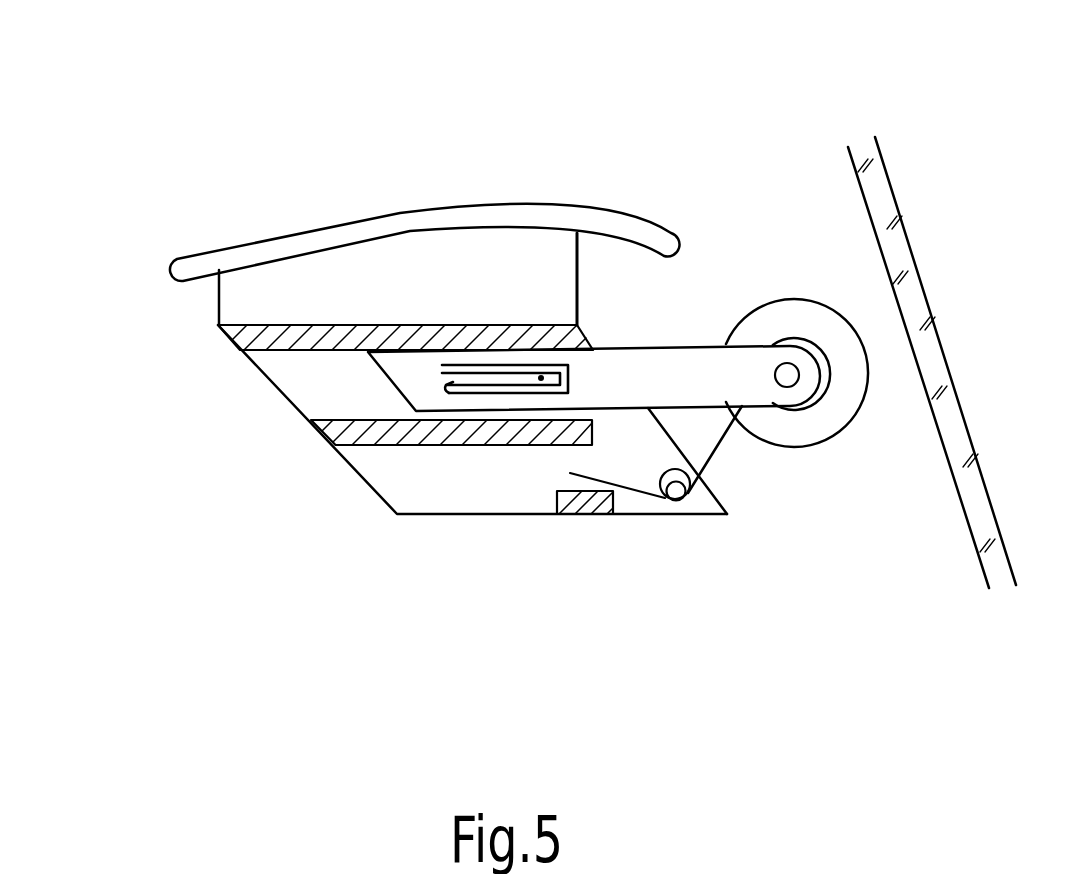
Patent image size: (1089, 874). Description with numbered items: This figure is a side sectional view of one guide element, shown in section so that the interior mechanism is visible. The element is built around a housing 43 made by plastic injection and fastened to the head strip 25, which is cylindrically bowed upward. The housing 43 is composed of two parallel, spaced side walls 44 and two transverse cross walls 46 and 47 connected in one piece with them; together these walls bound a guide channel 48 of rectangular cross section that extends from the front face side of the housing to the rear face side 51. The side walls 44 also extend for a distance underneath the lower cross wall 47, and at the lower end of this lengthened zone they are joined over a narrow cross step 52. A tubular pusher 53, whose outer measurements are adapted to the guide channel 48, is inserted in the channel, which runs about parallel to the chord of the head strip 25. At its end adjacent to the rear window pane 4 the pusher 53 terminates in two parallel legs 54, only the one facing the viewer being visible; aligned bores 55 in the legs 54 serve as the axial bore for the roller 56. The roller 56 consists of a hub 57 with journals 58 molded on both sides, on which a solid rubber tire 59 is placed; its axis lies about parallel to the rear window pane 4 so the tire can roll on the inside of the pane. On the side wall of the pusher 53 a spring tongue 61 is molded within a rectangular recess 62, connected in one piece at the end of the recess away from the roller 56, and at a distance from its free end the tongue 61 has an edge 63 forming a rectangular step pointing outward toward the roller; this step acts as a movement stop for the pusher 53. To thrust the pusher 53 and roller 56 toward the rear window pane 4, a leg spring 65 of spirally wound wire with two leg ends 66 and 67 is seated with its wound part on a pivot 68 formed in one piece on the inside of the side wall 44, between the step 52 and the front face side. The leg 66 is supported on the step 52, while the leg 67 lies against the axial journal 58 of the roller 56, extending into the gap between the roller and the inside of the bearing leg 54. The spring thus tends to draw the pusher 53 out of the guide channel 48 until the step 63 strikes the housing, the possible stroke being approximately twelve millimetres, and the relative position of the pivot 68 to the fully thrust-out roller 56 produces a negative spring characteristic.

The rear window pane 4 is at (883, 203).
The head strip 25 is at (340, 225).
The housing 43 is at (318, 497).
The side wall 44 is at (582, 301).
The cross wall 46 is at (336, 341).
The cross wall 47 is at (327, 428).
The guide channel 48 is at (305, 383).
The rear face side 51 is at (238, 344).
The cross step 52 is at (587, 514).
The pusher 53 is at (693, 367).
The leg 54 is at (773, 406).
The bore 55 is at (795, 377).
The roller 56 is at (851, 296).
The hub 57 is at (794, 336).
The journal 58 is at (797, 380).
The solid rubber tire 59 is at (848, 340).
The spring tongue 61 is at (510, 378).
The rectangular recess 62 is at (572, 407).
The edge 63 is at (541, 378).
The leg spring 65 is at (698, 490).
The leg end 66 is at (617, 464).
The leg end 67 is at (719, 478).
The pivot 68 is at (675, 501).